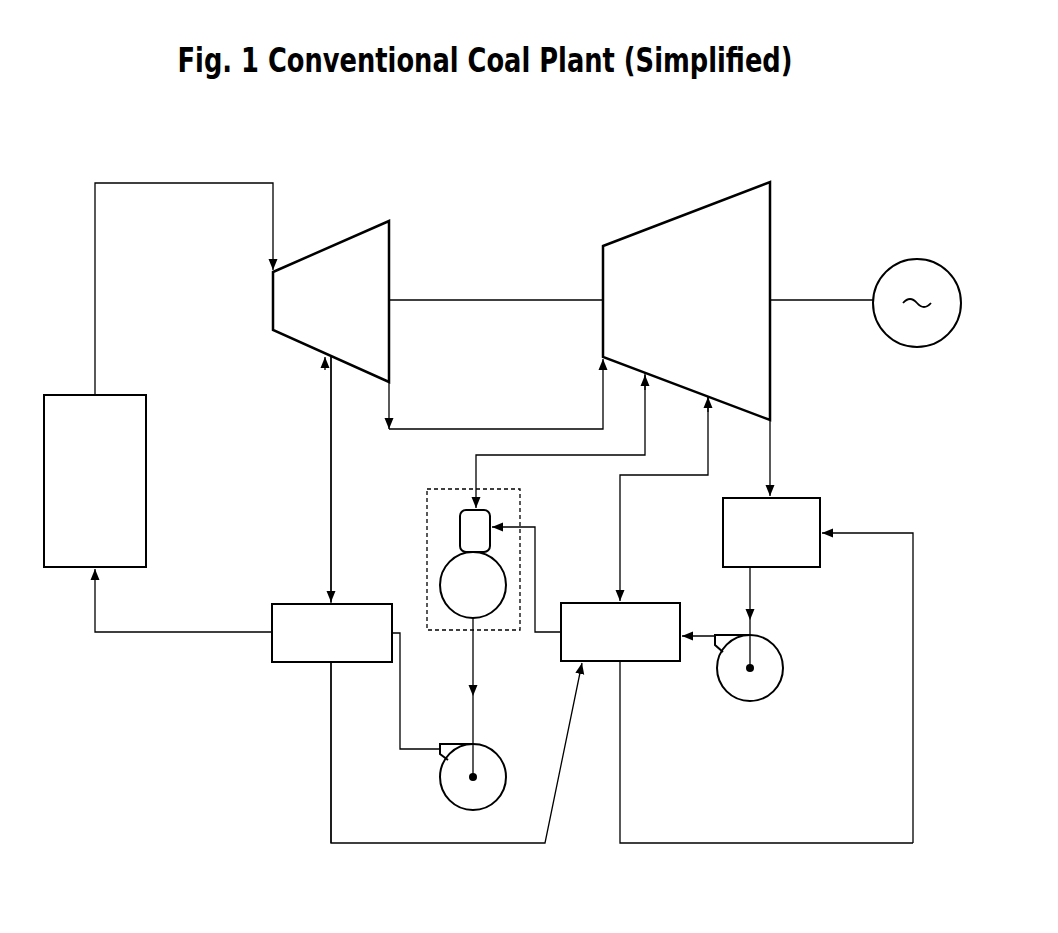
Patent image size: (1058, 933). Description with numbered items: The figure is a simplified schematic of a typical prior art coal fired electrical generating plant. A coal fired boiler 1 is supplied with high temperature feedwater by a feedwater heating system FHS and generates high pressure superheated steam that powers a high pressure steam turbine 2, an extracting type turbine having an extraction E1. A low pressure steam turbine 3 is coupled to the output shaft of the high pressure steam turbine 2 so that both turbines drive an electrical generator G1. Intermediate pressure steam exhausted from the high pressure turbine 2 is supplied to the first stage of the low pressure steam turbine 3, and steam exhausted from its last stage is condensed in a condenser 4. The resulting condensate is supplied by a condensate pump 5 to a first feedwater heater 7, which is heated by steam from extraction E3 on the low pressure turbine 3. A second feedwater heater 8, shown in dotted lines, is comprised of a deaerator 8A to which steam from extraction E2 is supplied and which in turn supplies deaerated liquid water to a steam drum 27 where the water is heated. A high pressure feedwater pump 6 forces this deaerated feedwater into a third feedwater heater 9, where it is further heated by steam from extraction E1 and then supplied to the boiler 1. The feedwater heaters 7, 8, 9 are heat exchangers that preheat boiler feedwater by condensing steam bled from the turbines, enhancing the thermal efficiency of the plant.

The coal fired boiler 1 is at (95, 481).
The high pressure steam turbine 2 is at (331, 301).
The low pressure steam turbine 3 is at (686, 301).
The condenser 4 is at (771, 532).
The condensate pump 5 is at (749, 668).
The high pressure feedwater pump 6 is at (473, 777).
The first feedwater heater 7 is at (620, 632).
The second feedwater heater 8 is at (425, 572).
The deaerator 8A is at (475, 531).
The steam drum 27 is at (473, 585).
The third feedwater heater 9 is at (332, 633).
The extraction E1 is at (325, 357).
The extraction E2 is at (638, 373).
The extraction E3 is at (710, 397).
The electrical generator G1 is at (916, 349).
The feedwater heating system FHS is at (312, 720).